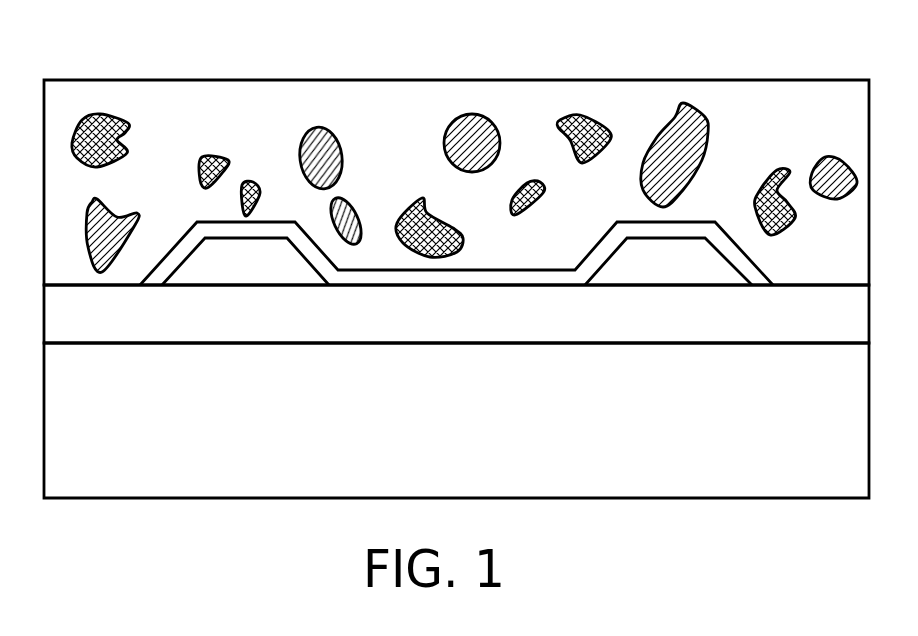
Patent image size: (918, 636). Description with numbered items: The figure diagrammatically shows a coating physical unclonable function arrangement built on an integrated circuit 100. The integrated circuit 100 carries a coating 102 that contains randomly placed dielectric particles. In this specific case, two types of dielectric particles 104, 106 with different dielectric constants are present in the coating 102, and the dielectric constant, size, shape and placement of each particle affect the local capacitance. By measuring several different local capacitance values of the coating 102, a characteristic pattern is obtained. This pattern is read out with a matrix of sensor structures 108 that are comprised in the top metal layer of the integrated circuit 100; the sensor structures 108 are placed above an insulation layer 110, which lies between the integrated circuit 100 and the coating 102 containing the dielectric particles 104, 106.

The integrated circuit 100 is at (815, 482).
The coating 102 is at (815, 116).
The dielectric particles of a first type 104 is at (103, 113).
The dielectric particles of a second type 106 is at (320, 128).
The sensor structures 108 is at (232, 270).
The insulation layer 110 is at (815, 324).